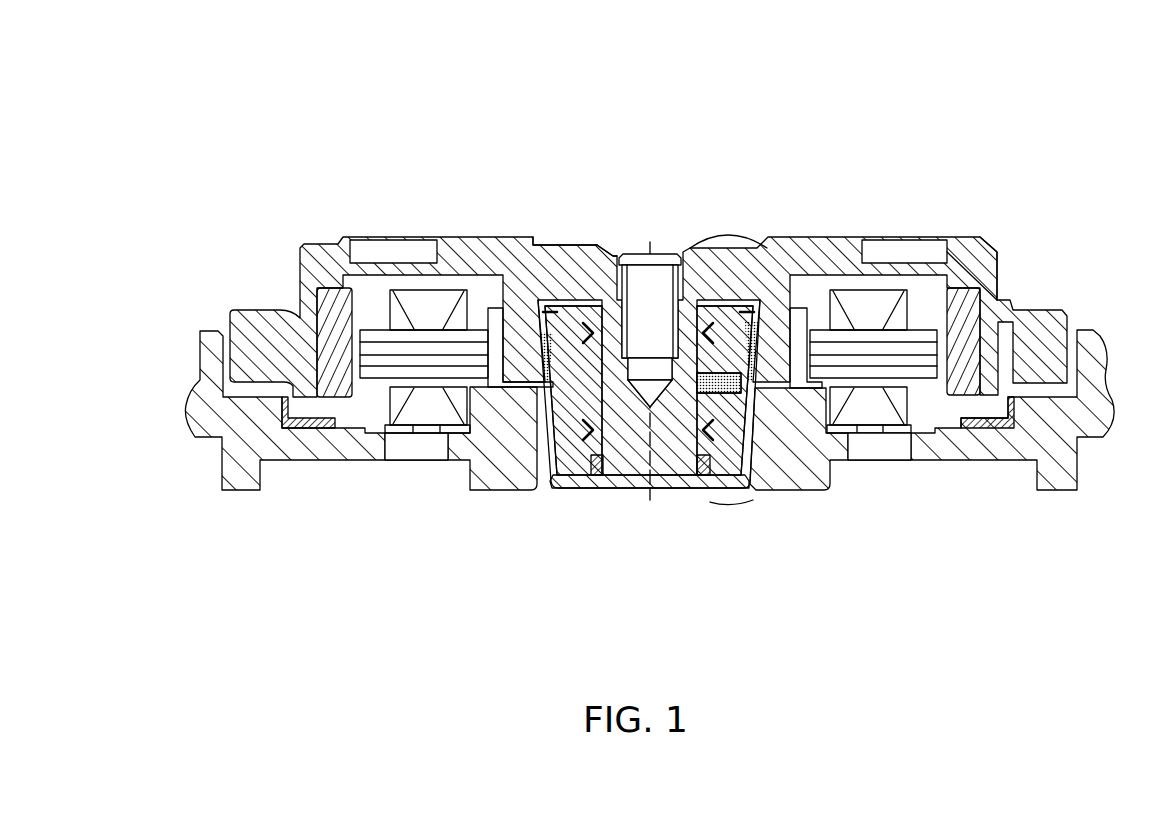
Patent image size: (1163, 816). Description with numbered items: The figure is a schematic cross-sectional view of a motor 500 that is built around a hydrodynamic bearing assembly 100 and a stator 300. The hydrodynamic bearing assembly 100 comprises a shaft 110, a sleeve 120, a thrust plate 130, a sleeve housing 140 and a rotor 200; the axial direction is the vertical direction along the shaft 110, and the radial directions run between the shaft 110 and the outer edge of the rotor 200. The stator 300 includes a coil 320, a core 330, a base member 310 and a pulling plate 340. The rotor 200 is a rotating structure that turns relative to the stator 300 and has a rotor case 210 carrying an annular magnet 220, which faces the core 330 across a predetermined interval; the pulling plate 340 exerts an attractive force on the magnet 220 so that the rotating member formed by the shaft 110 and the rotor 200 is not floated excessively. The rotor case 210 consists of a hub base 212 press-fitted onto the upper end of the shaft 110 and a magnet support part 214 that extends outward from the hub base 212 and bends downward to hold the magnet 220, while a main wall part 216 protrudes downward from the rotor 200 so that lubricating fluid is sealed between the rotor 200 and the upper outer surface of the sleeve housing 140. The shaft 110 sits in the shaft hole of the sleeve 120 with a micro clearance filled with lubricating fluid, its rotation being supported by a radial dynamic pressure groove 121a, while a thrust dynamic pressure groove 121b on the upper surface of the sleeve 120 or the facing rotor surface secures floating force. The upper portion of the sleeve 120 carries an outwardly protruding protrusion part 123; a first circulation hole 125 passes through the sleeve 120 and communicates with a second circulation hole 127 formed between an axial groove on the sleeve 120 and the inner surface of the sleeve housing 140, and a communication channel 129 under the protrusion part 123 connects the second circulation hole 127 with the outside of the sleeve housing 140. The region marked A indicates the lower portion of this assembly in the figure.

The hydrodynamic bearing assembly 100 is at (671, 403).
The shaft 110 is at (630, 457).
The sleeve 120 is at (567, 477).
The radial dynamic pressure groove 121a is at (606, 256).
The thrust dynamic pressure groove 121b is at (598, 300).
The protrusion part 123 is at (745, 305).
The first circulation hole 125 is at (717, 335).
The second circulation hole 127 is at (745, 312).
The communication channel 129 is at (757, 325).
The thrust plate 130 is at (703, 473).
The sleeve housing 140 is at (733, 490).
The rotor 200 is at (957, 256).
The rotor case 210 is at (967, 216).
The hub base 212 is at (960, 252).
The magnet support part 214 is at (993, 272).
The main wall part 216 is at (772, 322).
The magnet 220 is at (976, 318).
The stator 300 is at (401, 433).
The base member 310 is at (433, 476).
The coil 320 is at (420, 413).
The core 330 is at (372, 377).
The pulling plate 340 is at (987, 427).
The motor 500 is at (275, 197).
The region A is at (790, 463).